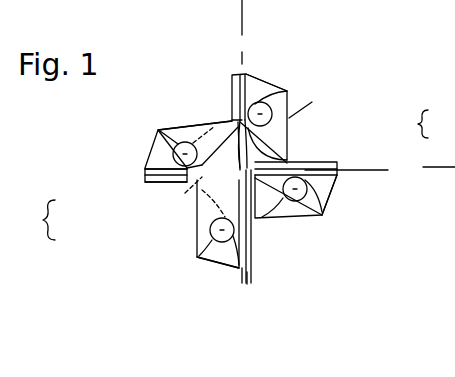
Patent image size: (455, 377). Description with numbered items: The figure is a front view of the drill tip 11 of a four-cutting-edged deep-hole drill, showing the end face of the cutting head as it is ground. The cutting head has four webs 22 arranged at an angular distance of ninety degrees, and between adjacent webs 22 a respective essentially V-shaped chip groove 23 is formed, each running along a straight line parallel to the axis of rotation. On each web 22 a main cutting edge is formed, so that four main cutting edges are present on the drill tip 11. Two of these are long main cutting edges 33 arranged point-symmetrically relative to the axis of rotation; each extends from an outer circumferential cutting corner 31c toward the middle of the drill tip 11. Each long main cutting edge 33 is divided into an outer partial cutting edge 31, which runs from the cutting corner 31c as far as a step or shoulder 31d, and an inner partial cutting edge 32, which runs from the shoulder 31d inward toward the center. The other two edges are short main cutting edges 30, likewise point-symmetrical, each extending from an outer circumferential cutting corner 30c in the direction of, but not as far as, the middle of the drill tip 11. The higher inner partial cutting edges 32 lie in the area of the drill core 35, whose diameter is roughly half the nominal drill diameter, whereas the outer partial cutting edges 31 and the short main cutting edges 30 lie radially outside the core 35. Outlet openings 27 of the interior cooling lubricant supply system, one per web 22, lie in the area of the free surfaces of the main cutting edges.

The drill tip 11 is at (108, 307).
The web 22 is at (276, 59).
The chip groove 23 is at (191, 94).
The outlet opening 27 is at (283, 86).
The short main cutting edge 30 is at (232, 90).
The cutting corner 30c is at (231, 63).
The outer partial cutting edge 31 is at (330, 157).
The cutting corner 31c is at (342, 158).
The shoulder 31d is at (147, 162).
The inner partial cutting edge 32 is at (300, 142).
The long main cutting edge 33 is at (234, 177).
The drill core 35 is at (313, 102).